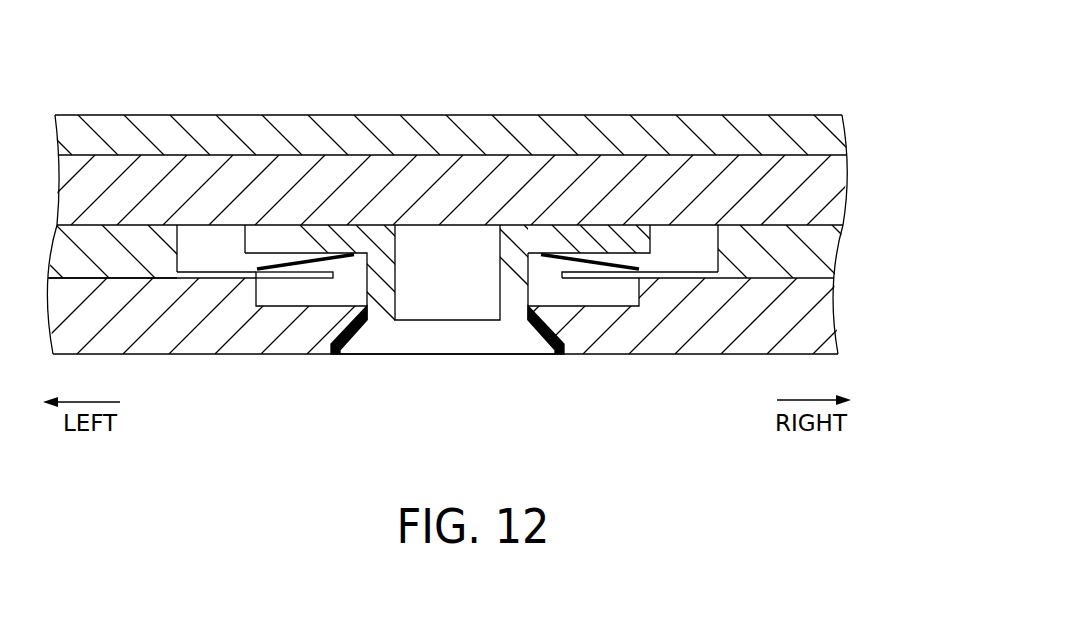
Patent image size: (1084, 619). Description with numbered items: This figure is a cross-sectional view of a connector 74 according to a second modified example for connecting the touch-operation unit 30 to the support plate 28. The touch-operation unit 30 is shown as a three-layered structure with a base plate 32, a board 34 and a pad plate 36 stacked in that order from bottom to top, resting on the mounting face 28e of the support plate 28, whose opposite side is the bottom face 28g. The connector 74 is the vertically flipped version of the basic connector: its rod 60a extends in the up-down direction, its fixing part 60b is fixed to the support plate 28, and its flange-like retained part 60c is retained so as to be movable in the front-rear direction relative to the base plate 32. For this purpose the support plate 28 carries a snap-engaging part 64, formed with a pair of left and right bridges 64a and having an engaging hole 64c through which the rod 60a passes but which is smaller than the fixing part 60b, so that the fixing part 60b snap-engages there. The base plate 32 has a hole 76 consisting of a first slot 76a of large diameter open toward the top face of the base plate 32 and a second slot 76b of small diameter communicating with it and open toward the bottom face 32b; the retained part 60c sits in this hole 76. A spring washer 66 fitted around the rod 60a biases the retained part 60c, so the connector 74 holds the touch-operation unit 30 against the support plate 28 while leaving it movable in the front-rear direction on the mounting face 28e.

The support plate 28 is at (803, 318).
The mounting face 28e is at (129, 275).
The bottom face 28g is at (747, 354).
The touch-operation unit 30 is at (902, 117).
The base plate 32 is at (812, 253).
The bottom face 32b is at (156, 280).
The board 34 is at (818, 192).
The pad plate 36 is at (825, 135).
The rod 60a is at (390, 268).
The fixing part 60b is at (541, 342).
The retained part 60c is at (615, 235).
The snap-engaging part 64 is at (321, 350).
The bridge 64a is at (297, 333).
The engaging hole 64c is at (352, 335).
The spring washer 66 is at (578, 252).
The connector 74 is at (478, 358).
The hole 76 is at (202, 48).
The first slot 76a is at (208, 247).
The second slot 76b is at (352, 280).